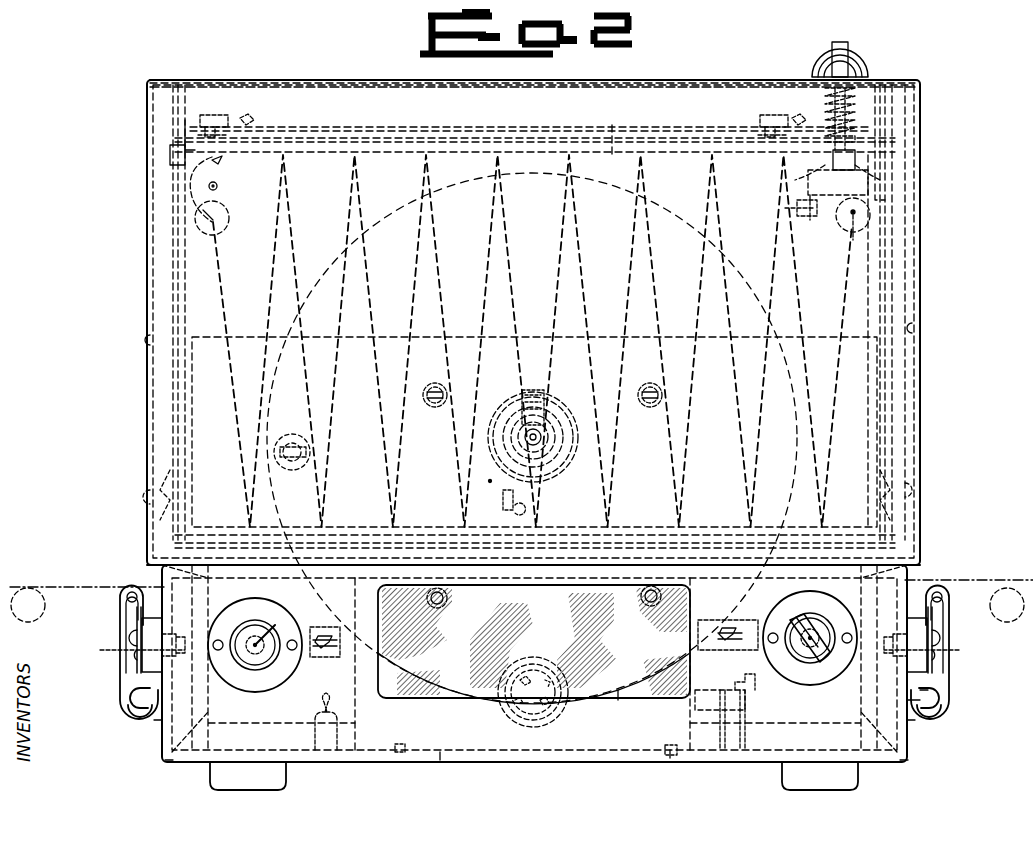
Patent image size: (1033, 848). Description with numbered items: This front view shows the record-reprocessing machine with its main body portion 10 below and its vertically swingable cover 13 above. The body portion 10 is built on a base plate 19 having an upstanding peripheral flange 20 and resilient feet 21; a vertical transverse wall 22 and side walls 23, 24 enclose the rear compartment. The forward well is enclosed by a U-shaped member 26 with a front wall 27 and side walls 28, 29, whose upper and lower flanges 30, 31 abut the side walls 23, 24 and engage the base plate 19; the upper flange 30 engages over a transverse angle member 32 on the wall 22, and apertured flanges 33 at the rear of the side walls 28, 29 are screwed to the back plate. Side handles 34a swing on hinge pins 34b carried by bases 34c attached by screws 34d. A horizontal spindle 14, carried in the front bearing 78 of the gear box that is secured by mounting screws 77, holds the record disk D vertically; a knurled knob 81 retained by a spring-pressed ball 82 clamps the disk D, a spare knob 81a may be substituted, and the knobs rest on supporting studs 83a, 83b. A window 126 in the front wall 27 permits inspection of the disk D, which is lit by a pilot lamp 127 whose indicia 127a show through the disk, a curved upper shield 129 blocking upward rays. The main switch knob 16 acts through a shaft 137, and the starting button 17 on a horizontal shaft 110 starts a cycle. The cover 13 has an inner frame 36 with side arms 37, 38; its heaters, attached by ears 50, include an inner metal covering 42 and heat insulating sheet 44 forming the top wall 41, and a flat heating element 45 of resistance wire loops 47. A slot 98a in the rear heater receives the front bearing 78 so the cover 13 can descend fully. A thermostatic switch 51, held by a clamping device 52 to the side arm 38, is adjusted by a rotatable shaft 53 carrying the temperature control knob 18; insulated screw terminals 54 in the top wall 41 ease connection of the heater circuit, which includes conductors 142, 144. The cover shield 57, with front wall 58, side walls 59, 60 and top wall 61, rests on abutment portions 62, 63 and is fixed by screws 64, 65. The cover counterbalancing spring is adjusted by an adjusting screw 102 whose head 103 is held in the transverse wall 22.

The main body portion 10 is at (445, 760).
The cover 13 is at (139, 304).
The spindle 14 is at (550, 446).
The main switch knob 16 is at (812, 664).
The starting button 17 is at (270, 672).
The temperature control knob 18 is at (862, 60).
The base plate 19 is at (400, 760).
The upstanding peripheral flange 20 is at (172, 742).
The resilient feet 21 is at (215, 782).
The transverse wall 22 is at (592, 336).
The side wall 23 is at (135, 702).
The side wall 24 is at (940, 692).
The U-shaped member 26 is at (675, 758).
The front wall 27 is at (648, 760).
The side wall 28 is at (162, 722).
The side wall 29 is at (907, 722).
The upper flange 30 is at (147, 565).
The lower flange 31 is at (170, 766).
The transverse angle member 32 is at (740, 582).
The apertured flanges 33 is at (210, 712).
The side handles 34a is at (62, 588).
The hinge pins 34b is at (128, 599).
The bases 34c is at (138, 635).
The screws 34d is at (150, 650).
The inner frame 36 is at (170, 234).
The side arm 37 is at (184, 255).
The side arm 38 is at (895, 253).
The top wall 41 is at (589, 118).
The inner metal covering 42 is at (530, 112).
The heat insulating sheet 44 is at (481, 134).
The flat heating element 45 is at (616, 125).
The loops of resistance wire 47 is at (628, 234).
The ears 50 is at (170, 155).
The thermostatic switch 51 is at (870, 296).
The clamping device 52 is at (797, 222).
The rotatable shaft 53 is at (858, 100).
The insulated screw terminals 54 is at (236, 118).
The cover shield 57 is at (729, 72).
The front wall 58 is at (668, 95).
The side wall 59 is at (148, 340).
The side wall 60 is at (915, 330).
The top wall 61 is at (628, 80).
The abutment portion 62 is at (172, 100).
The abutment portion 63 is at (892, 108).
The screw 64 is at (148, 497).
The screw 65 is at (908, 489).
The mounting screws 77 is at (436, 386).
The front bearing 78 is at (548, 422).
The knurled knob 81 is at (497, 494).
The spare knob 81a is at (694, 708).
The spring-pressed ball 82 is at (525, 408).
The supporting stud 83a is at (746, 686).
The supporting stud 83b is at (342, 694).
The slot 98a is at (512, 505).
The adjusting screw 102 is at (300, 445).
The head 103 is at (312, 456).
The horizontal shaft 110 is at (280, 630).
The window 126 is at (430, 698).
The pilot lamp 127 is at (552, 718).
The indicia 127a is at (528, 712).
The curved upper shield 129 is at (505, 712).
The shaft 137 is at (812, 613).
The conductor 142 is at (195, 186).
The conductor 144 is at (872, 176).
The record disk D is at (630, 688).